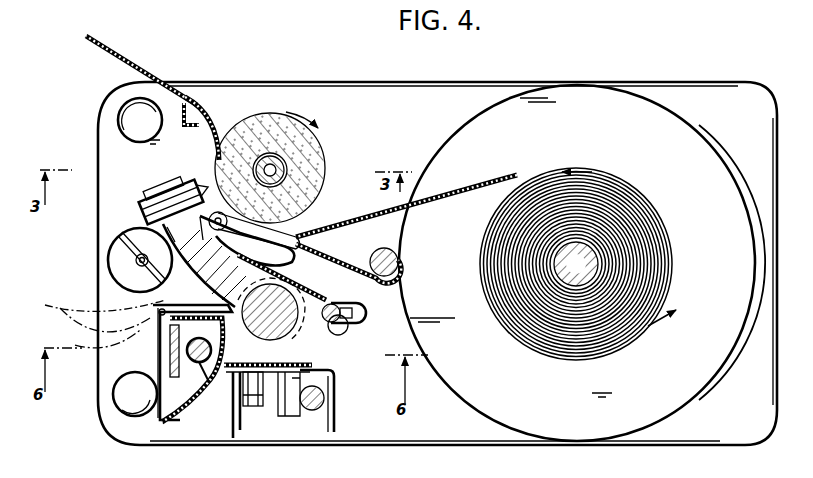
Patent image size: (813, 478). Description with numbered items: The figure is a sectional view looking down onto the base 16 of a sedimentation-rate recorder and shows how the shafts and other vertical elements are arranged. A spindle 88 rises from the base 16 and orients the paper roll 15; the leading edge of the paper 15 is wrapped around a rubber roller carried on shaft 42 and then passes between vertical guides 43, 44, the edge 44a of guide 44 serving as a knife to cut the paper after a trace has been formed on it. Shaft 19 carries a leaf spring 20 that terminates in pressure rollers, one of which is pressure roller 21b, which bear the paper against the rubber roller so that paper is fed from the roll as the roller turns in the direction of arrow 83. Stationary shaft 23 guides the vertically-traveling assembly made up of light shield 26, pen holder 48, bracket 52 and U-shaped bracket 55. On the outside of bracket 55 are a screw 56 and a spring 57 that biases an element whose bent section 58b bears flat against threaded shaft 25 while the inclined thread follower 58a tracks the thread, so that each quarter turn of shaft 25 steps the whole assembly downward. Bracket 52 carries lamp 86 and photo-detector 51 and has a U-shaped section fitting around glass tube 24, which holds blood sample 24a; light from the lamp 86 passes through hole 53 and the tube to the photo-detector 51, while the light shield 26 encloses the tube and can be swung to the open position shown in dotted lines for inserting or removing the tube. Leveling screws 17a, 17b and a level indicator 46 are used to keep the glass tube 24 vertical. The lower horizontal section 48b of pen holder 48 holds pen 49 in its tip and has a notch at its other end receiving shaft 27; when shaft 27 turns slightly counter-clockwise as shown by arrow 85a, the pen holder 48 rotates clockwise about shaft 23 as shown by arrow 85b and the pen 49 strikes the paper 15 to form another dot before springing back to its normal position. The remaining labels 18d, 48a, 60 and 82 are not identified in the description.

The paper roll 15 is at (362, 214).
The base 16 is at (360, 100).
The leveling screw 17a is at (118, 119).
The leveling screw 17b is at (117, 395).
The lever arm 18d is at (292, 244).
The shaft 19 is at (386, 249).
The leaf spring 20 is at (340, 262).
The pressure roller 21b is at (200, 186).
The stationary shaft 23 is at (283, 259).
The glass tube 24 is at (202, 366).
The blood sample 24a is at (213, 415).
The threaded shaft 25 is at (314, 412).
The light shield 26 is at (60, 311).
The shaft 27 is at (340, 305).
The shaft 42 is at (262, 155).
The vertical guide 43 is at (140, 120).
The vertical guide 44 is at (205, 96).
The edge 44a is at (186, 100).
The level indicator 46 is at (110, 258).
The pen holder 48 is at (325, 342).
The frame portion 48a is at (158, 182).
The lower horizontal section 48b is at (345, 328).
The pen 49 is at (142, 209).
The photo-detector 51 is at (135, 394).
The bracket 52 is at (168, 350).
The hole 53 is at (210, 300).
The U-shaped bracket 55 is at (318, 364).
The screw 56 is at (238, 430).
The spring 57 is at (254, 408).
The thread follower 58a is at (294, 416).
The bent section 58b is at (338, 412).
The hub 60 is at (273, 154).
The tape 82 is at (316, 152).
The arrow 83 is at (306, 112).
The arrow 85a is at (362, 314).
The arrow 85b is at (150, 176).
The lamp 86 is at (243, 306).
The spindle 88 is at (576, 264).